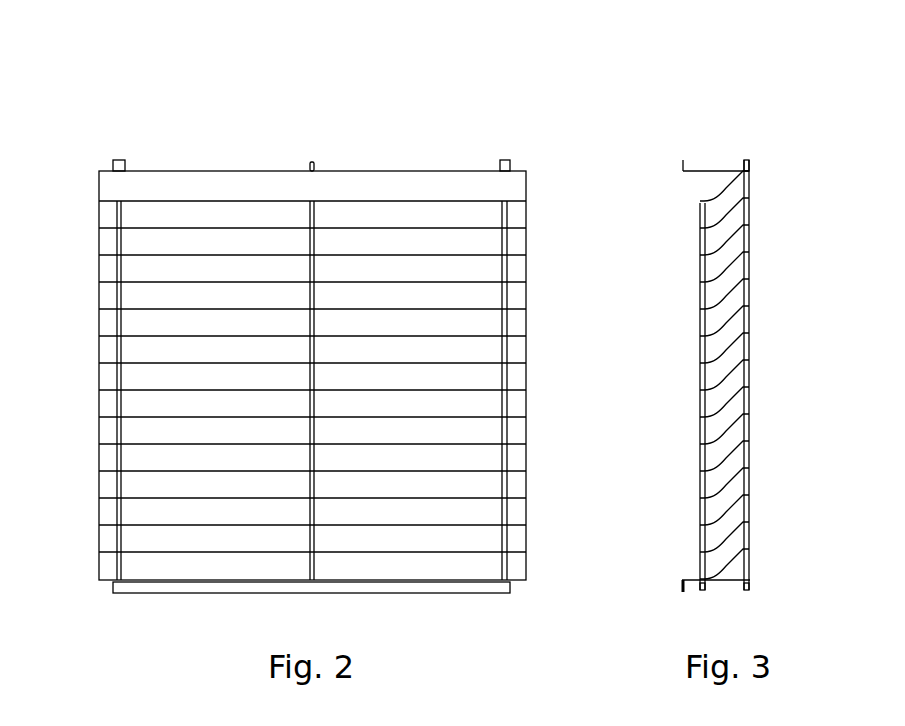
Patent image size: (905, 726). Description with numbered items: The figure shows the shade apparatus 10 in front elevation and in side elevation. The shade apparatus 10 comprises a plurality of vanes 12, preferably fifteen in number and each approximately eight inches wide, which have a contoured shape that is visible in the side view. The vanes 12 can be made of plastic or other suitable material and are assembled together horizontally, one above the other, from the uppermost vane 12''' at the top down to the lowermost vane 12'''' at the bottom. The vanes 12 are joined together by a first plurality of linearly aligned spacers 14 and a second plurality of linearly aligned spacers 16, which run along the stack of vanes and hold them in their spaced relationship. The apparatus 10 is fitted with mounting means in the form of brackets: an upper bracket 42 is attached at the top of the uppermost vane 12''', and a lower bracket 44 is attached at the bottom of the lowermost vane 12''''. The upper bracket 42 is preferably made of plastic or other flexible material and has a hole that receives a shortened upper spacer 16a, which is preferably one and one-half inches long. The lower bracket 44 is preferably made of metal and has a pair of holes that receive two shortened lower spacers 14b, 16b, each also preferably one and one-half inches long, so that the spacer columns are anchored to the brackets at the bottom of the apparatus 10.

In FIG. 2, the shade apparatus 10 is at (78, 118).
In FIG. 3, the shade apparatus 10 is at (628, 118).
In FIG. 2, the vane 12 is at (312, 390).
In FIG. 3, the vane 12 is at (726, 375).
In FIG. 2, the uppermost vane 12''' is at (249, 122).
In FIG. 3, the uppermost vane 12''' is at (673, 190).
In FIG. 2, the lowermost vane 12'''' is at (311, 641).
In FIG. 3, the lowermost vane 12'''' is at (777, 536).
In FIG. 2, the first plurality of linearly aligned spacers 14 is at (118, 218).
In FIG. 3, the first plurality of linearly aligned spacers 14 is at (700, 350).
In FIG. 3, the shortened lower spacer 14b is at (702, 592).
In FIG. 3, the second plurality of linearly aligned spacers 16 is at (750, 318).
In FIG. 2, the shortened upper spacer 16a is at (119, 158).
In FIG. 3, the shortened upper spacer 16a is at (747, 160).
In FIG. 3, the shortened lower spacer 16b is at (748, 592).
In FIG. 3, the upper bracket 42 is at (692, 169).
In FIG. 3, the lower bracket 44 is at (686, 578).